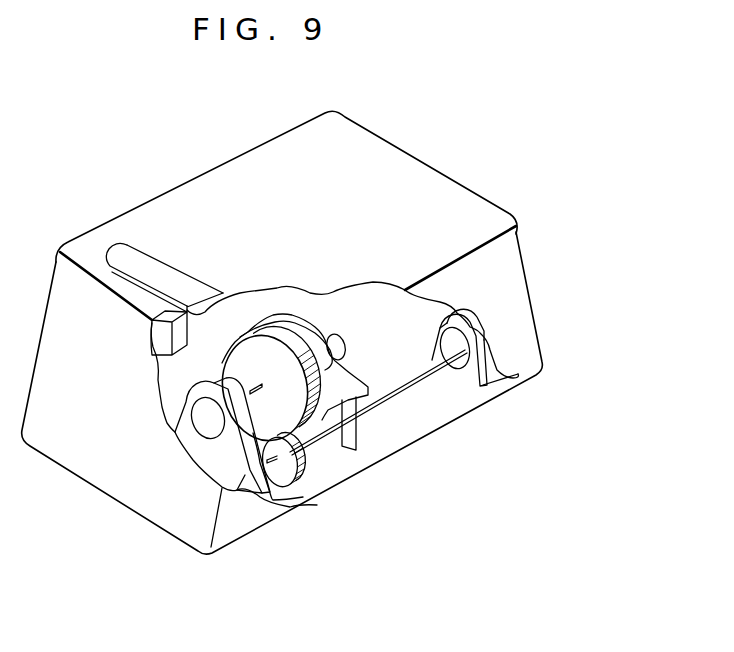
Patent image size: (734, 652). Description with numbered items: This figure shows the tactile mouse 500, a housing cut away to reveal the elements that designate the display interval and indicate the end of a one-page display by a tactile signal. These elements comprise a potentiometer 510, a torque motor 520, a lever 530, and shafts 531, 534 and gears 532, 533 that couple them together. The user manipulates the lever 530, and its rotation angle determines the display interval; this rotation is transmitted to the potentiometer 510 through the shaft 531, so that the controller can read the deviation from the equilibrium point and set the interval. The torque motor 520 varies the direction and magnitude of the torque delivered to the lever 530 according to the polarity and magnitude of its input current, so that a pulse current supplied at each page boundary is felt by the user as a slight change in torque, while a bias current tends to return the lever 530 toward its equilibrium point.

The tactile mouse 500 is at (405, 148).
The potentiometer 510 is at (178, 413).
The torque motor 520 is at (448, 377).
The lever 530 is at (303, 325).
The shaft 531 is at (232, 367).
The gear 532 is at (223, 348).
The gear 533 is at (308, 480).
The shaft 534 is at (395, 387).